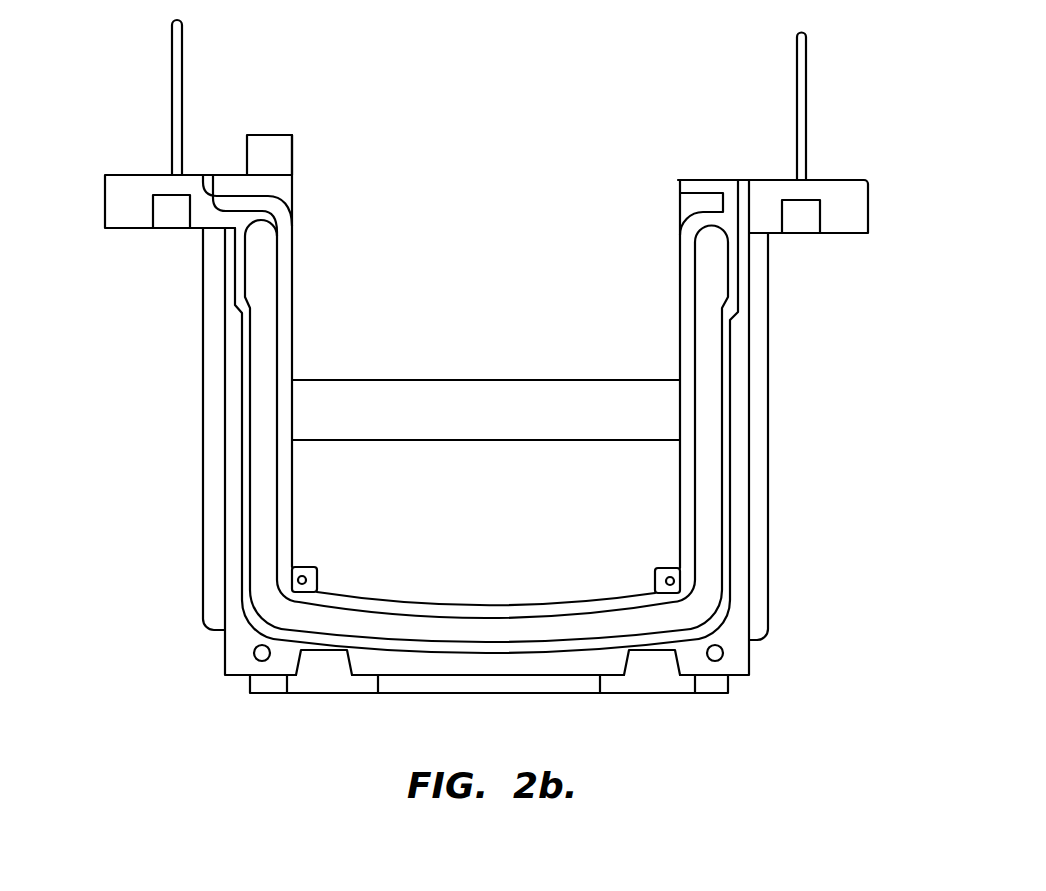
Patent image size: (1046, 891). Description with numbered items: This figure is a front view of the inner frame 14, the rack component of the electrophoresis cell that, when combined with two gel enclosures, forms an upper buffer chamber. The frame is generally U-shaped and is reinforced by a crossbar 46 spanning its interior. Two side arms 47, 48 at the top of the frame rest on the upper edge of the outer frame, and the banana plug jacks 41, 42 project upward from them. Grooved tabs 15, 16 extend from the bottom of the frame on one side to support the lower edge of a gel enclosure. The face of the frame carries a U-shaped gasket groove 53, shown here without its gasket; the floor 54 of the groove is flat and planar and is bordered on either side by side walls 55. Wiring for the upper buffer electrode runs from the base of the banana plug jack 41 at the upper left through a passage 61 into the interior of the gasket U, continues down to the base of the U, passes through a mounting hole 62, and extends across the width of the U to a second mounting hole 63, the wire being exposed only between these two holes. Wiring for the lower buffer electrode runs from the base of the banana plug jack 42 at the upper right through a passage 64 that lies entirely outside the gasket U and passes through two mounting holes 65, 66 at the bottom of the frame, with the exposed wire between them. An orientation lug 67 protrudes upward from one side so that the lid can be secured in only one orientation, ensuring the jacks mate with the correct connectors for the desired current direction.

The inner frame 14 is at (899, 102).
The grooved tab 15 is at (326, 676).
The grooved tab 16 is at (653, 677).
The banana plug jack 41 is at (170, 40).
The banana plug jack 42 is at (807, 53).
The crossbar 46 is at (462, 380).
The side arm 47 is at (135, 175).
The side arm 48 is at (832, 182).
The gasket groove 53 is at (712, 410).
The floor of the groove 54 is at (708, 476).
The side walls 55 is at (698, 534).
The passage 61 is at (288, 204).
The mounting hole 62 is at (304, 577).
The mounting hole 63 is at (668, 578).
The passage 64 is at (743, 198).
The mounting hole 65 is at (723, 655).
The mounting hole 66 is at (254, 653).
The orientation lug 67 is at (272, 135).